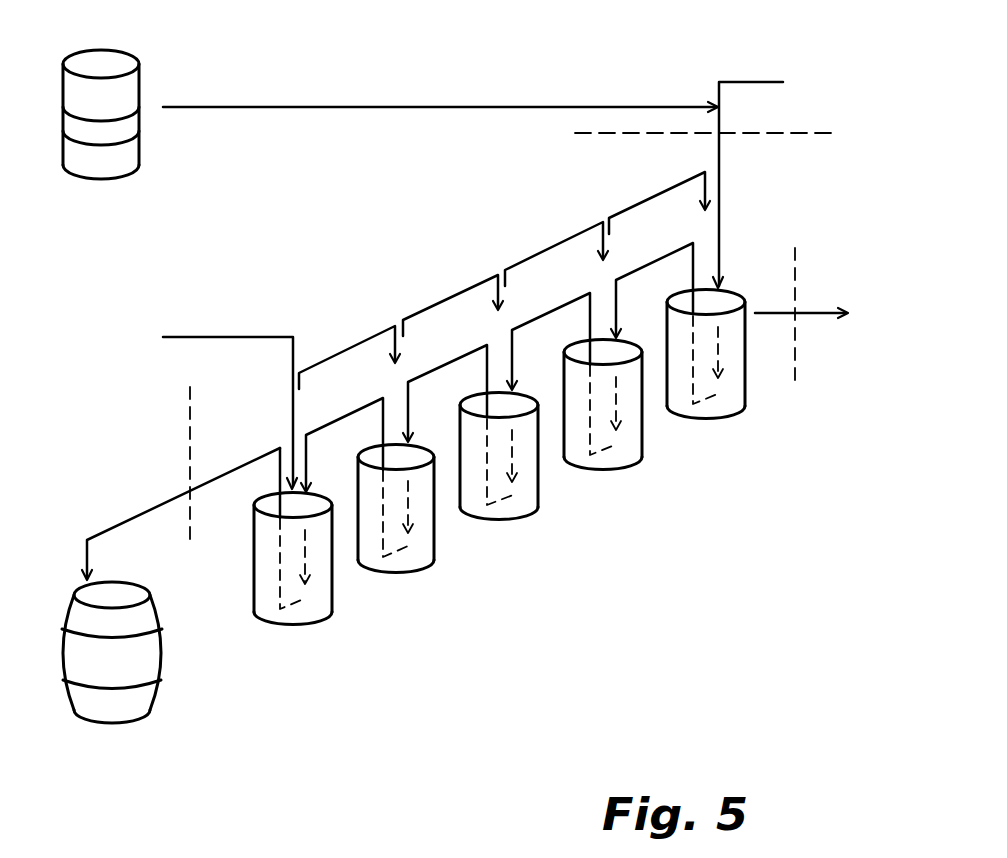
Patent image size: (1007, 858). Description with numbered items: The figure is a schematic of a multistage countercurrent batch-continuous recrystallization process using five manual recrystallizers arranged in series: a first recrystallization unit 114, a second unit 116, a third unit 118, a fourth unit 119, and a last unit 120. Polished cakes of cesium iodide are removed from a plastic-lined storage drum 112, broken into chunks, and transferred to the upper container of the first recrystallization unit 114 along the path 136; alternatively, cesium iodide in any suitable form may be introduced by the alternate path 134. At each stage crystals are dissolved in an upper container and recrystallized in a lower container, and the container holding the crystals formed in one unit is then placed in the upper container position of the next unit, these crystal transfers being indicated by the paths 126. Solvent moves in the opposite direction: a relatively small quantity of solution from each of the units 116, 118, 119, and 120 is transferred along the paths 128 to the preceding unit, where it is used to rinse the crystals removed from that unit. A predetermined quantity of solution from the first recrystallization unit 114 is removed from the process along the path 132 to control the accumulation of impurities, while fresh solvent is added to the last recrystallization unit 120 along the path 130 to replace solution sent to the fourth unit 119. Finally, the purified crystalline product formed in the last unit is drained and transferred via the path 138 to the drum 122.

The plastic-lined storage drum 112 is at (110, 177).
The first recrystallization unit 114 is at (707, 418).
The second recrystallization unit 116 is at (605, 470).
The third recrystallization unit 118 is at (513, 512).
The fourth recrystallization unit 119 is at (420, 568).
The last recrystallization unit 120 is at (310, 615).
The drum 122 is at (107, 700).
The paths for crystal transfer 126 is at (620, 278).
The paths for solution transfer 128 is at (613, 210).
The fresh solvent path 130 is at (240, 335).
The solution removal path 132 is at (828, 310).
The alternate feed path 134 is at (760, 82).
The feed path 136 is at (378, 102).
The product transfer path 138 is at (223, 470).